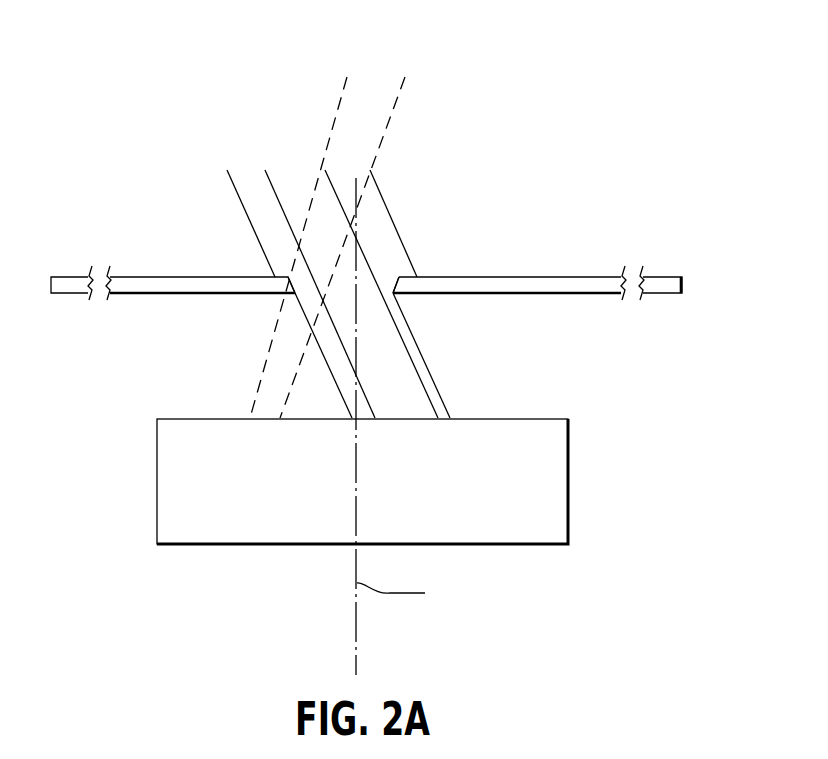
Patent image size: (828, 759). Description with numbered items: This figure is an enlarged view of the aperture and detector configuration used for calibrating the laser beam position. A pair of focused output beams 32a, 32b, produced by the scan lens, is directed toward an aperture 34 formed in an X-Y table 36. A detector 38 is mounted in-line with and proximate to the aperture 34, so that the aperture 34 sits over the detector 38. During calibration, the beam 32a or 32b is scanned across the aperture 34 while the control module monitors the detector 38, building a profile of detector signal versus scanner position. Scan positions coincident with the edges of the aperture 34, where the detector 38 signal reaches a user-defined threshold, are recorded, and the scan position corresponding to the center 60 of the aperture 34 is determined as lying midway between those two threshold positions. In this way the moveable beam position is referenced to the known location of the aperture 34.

The output beam 32a is at (250, 173).
The output beam 32b is at (367, 82).
The aperture 34 is at (353, 280).
The X-Y table 36 is at (657, 277).
The detector 38 is at (568, 472).
The center of the aperture 60 is at (355, 622).